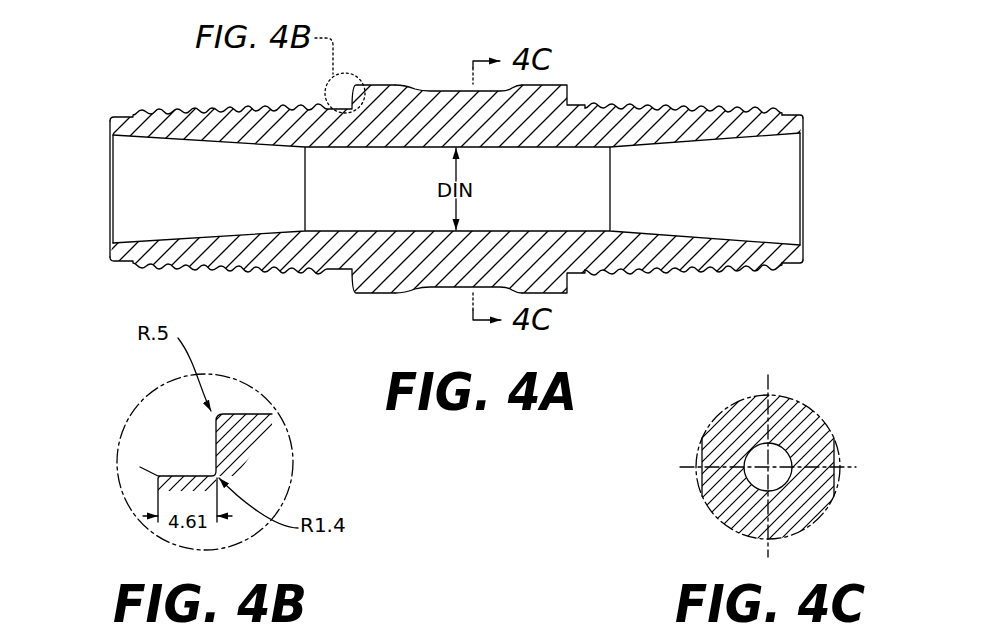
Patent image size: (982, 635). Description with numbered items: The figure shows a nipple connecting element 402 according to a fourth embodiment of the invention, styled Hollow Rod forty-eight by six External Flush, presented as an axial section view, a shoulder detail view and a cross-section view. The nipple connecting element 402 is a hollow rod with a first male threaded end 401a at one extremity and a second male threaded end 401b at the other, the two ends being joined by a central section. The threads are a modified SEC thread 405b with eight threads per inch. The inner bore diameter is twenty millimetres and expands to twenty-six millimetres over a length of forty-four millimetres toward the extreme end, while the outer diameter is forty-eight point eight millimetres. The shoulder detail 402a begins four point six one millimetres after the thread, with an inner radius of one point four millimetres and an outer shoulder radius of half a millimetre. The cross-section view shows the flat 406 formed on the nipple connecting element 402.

In FIG. 4A, the first male threaded end 401a is at (191, 129).
In FIG. 4A, the second male threaded end 401b is at (733, 122).
In FIG. 4A, the nipple connecting element 402 is at (433, 88).
In FIG. 4B, the shoulder detail 402a is at (212, 445).
In FIG. 4A, the modified SEC thread 405b is at (633, 104).
In FIG. 4C, the flat 406 is at (836, 496).